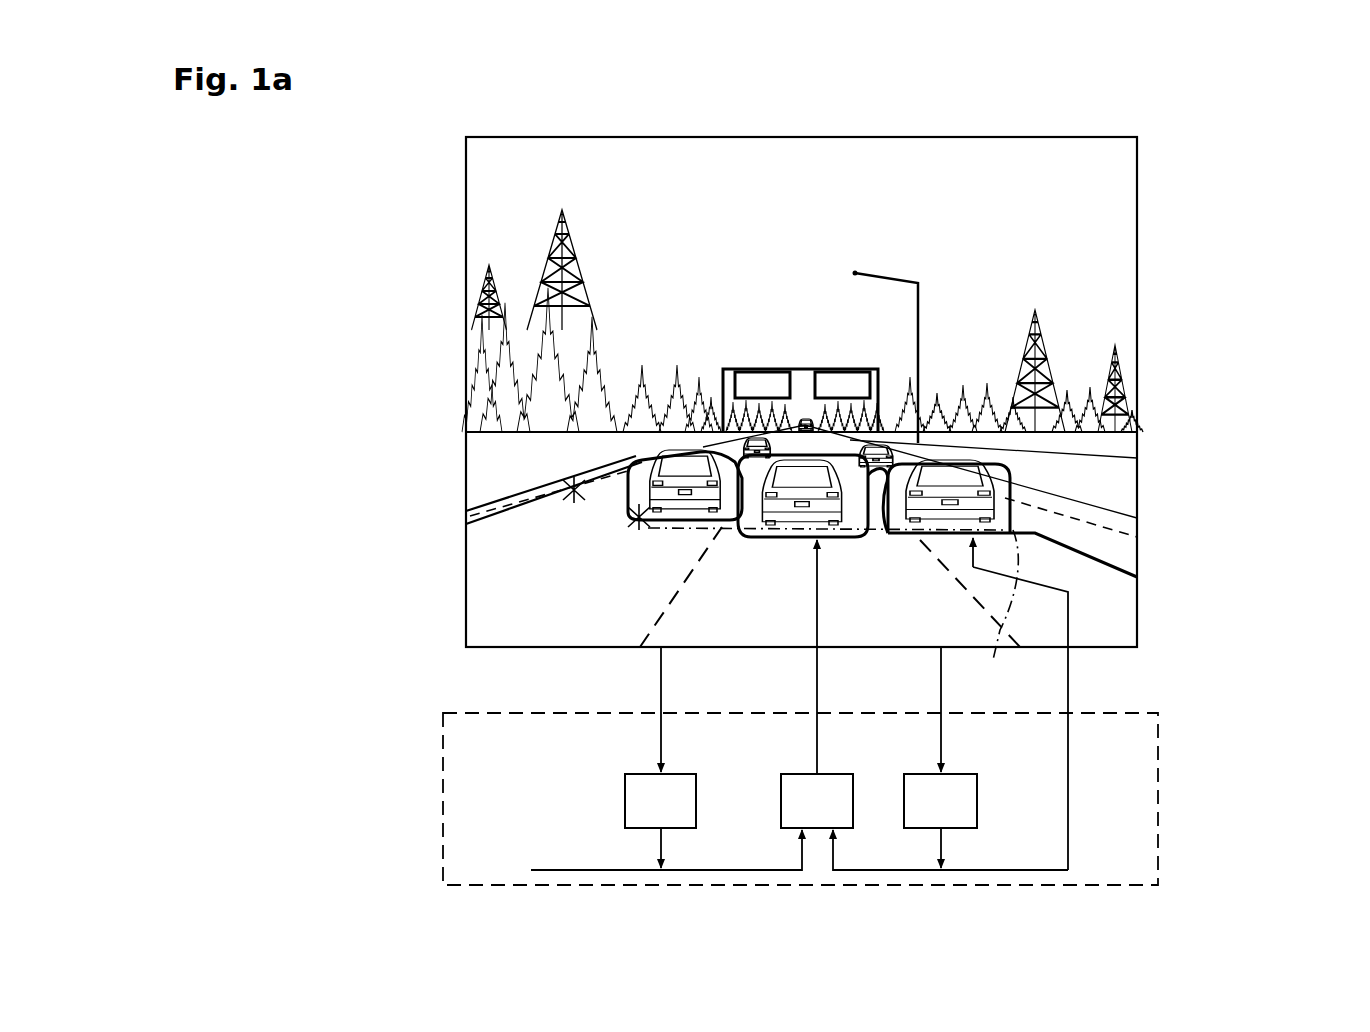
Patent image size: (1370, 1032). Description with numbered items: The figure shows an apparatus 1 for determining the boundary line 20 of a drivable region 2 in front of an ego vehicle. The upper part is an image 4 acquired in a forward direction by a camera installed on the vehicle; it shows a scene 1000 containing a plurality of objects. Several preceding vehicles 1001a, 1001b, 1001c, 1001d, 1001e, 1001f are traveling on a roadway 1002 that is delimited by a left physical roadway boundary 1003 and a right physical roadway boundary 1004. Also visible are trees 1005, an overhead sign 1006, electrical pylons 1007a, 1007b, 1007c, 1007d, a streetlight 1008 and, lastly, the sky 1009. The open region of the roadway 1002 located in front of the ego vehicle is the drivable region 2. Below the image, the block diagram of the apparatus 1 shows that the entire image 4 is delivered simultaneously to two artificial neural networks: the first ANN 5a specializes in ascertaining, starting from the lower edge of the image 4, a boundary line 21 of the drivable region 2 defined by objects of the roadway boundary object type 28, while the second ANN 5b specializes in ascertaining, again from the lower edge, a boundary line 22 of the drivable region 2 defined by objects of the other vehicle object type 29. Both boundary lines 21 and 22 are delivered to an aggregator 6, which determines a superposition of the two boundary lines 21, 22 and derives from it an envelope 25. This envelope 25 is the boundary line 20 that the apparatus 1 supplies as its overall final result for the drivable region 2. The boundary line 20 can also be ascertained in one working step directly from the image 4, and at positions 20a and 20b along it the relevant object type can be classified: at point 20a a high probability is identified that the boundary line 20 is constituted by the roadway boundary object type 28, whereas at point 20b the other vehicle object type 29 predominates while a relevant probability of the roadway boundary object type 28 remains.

The apparatus 1 is at (830, 766).
The drivable region 2 is at (890, 572).
The roadway 1002 is at (1110, 604).
The image 4 is at (661, 738).
The scene 1000 is at (1190, 163).
The first ANN 5a is at (625, 801).
The second ANN 5b is at (977, 800).
The aggregator 6 is at (781, 801).
The boundary line 20 is at (801, 670).
The position along boundary line 20a is at (574, 506).
The position along boundary line 20b is at (640, 533).
The boundary line 21 is at (500, 490).
The boundary line 22 is at (994, 640).
The envelope 25 is at (1115, 578).
The roadway boundary object type 28 is at (802, 466).
The left physical roadway boundary 1003 is at (487, 460).
The right physical roadway boundary 1004 is at (1115, 483).
The other vehicle object type 29 is at (899, 387).
The preceding vehicle 1001a is at (669, 462).
The preceding vehicle 1001b is at (788, 470).
The preceding vehicle 1001c is at (1012, 490).
The preceding vehicle 1001d is at (749, 440).
The preceding vehicle 1001e is at (806, 420).
The preceding vehicle 1001f is at (1012, 480).
The trees 1005 is at (542, 370).
The overhead sign 1006 is at (820, 420).
The electrical pylon 1007a is at (485, 268).
The electrical pylon 1007b is at (557, 211).
The electrical pylon 1007c is at (1040, 316).
The electrical pylon 1007d is at (1118, 348).
The streetlight 1008 is at (858, 273).
The sky 1009 is at (505, 165).